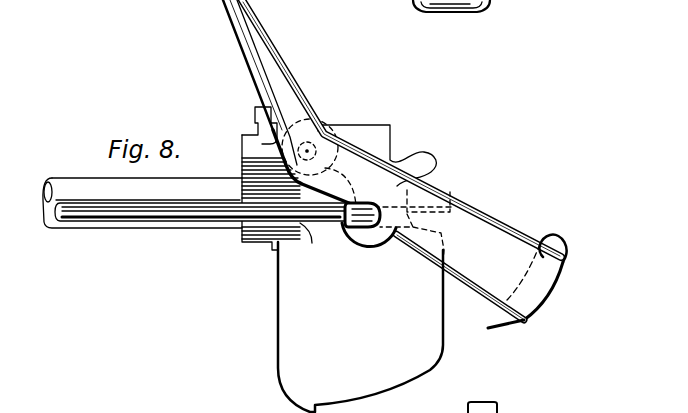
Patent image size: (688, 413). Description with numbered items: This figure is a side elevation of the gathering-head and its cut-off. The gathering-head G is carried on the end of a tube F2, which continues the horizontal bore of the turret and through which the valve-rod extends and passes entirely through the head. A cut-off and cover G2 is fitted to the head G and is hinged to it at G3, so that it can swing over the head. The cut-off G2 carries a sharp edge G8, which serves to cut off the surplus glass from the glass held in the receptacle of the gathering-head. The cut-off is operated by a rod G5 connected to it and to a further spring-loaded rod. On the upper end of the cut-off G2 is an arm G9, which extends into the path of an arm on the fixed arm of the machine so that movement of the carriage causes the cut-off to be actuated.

The tube F2 is at (78, 189).
The gathering-head G is at (290, 272).
The cut-off and cover G2 is at (493, 242).
The hinge G3 is at (319, 132).
The rod G5 is at (137, 213).
The sharp edge G8 is at (488, 328).
The arm G9 is at (284, 100).